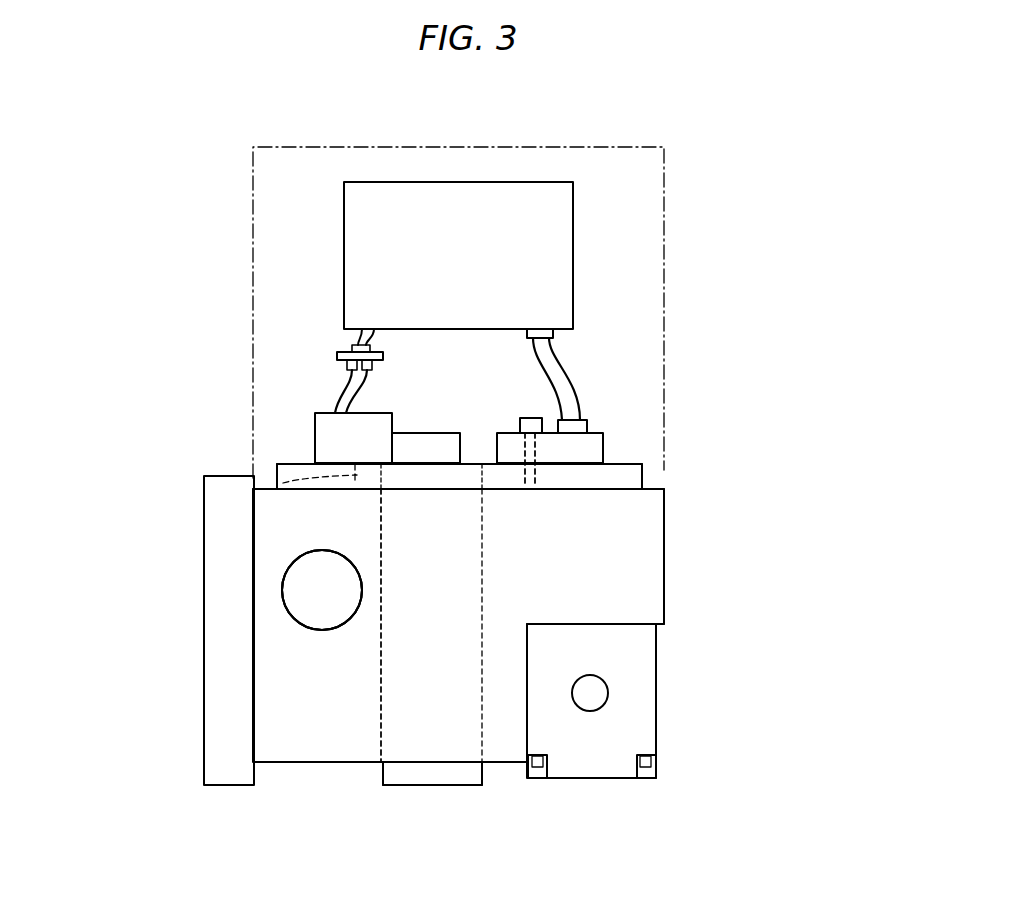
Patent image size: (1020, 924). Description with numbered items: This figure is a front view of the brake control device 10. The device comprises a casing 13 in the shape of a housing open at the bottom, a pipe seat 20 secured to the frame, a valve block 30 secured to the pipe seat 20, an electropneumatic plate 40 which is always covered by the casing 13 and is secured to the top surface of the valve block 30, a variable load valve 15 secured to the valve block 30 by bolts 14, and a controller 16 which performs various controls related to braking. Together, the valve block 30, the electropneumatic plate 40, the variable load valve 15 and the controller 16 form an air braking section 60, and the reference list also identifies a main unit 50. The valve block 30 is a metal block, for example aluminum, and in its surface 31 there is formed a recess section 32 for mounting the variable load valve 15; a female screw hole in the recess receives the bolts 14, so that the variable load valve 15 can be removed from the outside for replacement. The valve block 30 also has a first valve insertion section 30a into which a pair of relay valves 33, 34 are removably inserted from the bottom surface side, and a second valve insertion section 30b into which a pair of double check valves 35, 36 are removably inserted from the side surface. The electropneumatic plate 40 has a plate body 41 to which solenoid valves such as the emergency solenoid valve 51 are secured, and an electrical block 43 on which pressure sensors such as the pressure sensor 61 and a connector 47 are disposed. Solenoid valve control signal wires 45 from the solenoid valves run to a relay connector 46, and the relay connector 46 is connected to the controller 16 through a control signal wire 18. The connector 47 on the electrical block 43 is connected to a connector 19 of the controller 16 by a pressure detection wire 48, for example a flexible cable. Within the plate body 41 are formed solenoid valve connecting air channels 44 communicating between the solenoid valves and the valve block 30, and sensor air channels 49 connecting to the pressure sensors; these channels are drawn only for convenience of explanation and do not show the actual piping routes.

The brake control device 10 is at (767, 218).
The casing 13 is at (253, 210).
The bolts 14 is at (537, 765).
The variable load valve 15 is at (679, 718).
The controller 16 is at (573, 239).
The control signal wire 18 is at (372, 333).
The connector 19 is at (553, 335).
The pipe seat 20 is at (186, 718).
The valve block 30 is at (678, 577).
The first valve insertion section 30a is at (380, 740).
The second valve insertion section 30b is at (315, 550).
The surface 31 is at (664, 528).
The recess section 32 is at (603, 624).
The relay valve 33 is at (435, 770).
The relay valve 34 is at (432, 773).
The double check valve 35 is at (282, 597).
The double check valve 36 is at (322, 590).
The electropneumatic plate 40 is at (260, 467).
The plate body 41 is at (633, 477).
The electrical block 43 is at (588, 454).
The solenoid valve connecting air channel 44 is at (283, 483).
The solenoid valve control signal wire 45 is at (327, 395).
The relay connector 46 is at (337, 357).
The connector 47 is at (587, 425).
The pressure detection wire 48 is at (580, 388).
The sensor air channel 49 is at (535, 485).
The main unit 50 is at (159, 480).
The emergency solenoid valve 51 is at (327, 428).
The air braking section 60 is at (642, 285).
The pressure sensor 61 is at (530, 417).